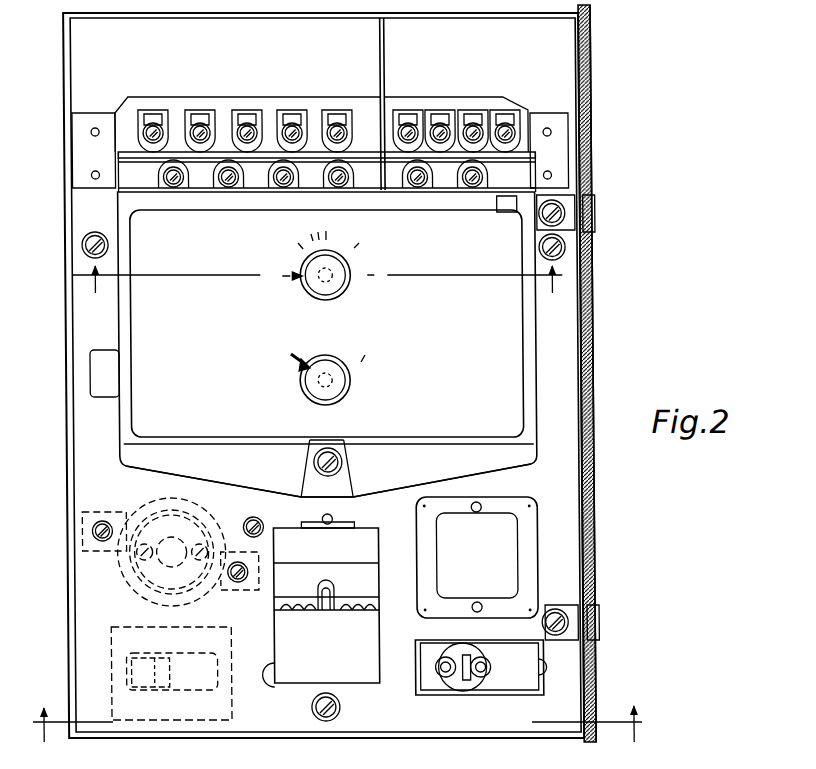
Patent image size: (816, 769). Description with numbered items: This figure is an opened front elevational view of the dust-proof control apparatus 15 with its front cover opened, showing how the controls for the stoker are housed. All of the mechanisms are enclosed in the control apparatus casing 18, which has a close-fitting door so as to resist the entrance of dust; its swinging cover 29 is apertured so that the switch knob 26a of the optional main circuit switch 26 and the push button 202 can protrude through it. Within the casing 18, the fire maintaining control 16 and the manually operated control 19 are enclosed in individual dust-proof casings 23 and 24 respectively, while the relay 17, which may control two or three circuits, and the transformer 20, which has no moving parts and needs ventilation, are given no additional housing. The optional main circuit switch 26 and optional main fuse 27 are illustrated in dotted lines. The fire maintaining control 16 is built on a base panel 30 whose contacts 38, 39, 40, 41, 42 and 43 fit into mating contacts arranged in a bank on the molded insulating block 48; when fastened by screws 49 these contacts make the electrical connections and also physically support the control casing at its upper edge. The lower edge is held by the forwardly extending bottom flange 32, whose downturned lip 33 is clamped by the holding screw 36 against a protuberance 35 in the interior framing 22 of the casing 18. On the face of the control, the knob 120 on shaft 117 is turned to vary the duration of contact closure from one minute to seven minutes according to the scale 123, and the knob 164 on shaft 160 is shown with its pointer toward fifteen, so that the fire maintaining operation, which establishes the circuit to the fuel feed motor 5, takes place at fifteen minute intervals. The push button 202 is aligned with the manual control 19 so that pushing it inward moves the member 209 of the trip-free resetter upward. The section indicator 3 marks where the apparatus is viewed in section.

The section line 3- 3 is at (338, 710).
The fuel feed motor 5 is at (318, 292).
The control apparatus 15 is at (566, 328).
The fire maintaining control 16 is at (511, 382).
The relay 17 is at (366, 543).
The control apparatus casing 18 is at (580, 370).
The manually operated control 19 is at (484, 672).
The transformer 20 is at (503, 537).
The interior framing 22 is at (232, 499).
The dust-proof casing 23 is at (522, 353).
The dust-proof casing 24 is at (528, 683).
The main circuit switch 26 is at (122, 648).
The switch knob 26a is at (124, 674).
The main fuse 27 is at (118, 587).
The swinging cover 29 is at (590, 482).
The base panel 30 is at (321, 418).
The bottom flange 32 is at (460, 443).
The downturned lip 33 is at (308, 446).
The protuberance 35 is at (342, 480).
The holding screw 36 is at (341, 462).
The contact 38 is at (172, 184).
The contact 39 is at (228, 184).
The contact 40 is at (278, 183).
The contact 41 is at (347, 189).
The contact 42 is at (408, 189).
The contact 43 is at (480, 189).
The molded insulating block 48 is at (299, 170).
The screws 49 is at (173, 183).
The shaft 117 is at (303, 288).
The knob 120 is at (342, 282).
The scale 123 is at (287, 252).
The shaft 160 is at (312, 383).
The knob 164 is at (340, 383).
The push button 202 is at (468, 650).
The member 209 is at (458, 657).